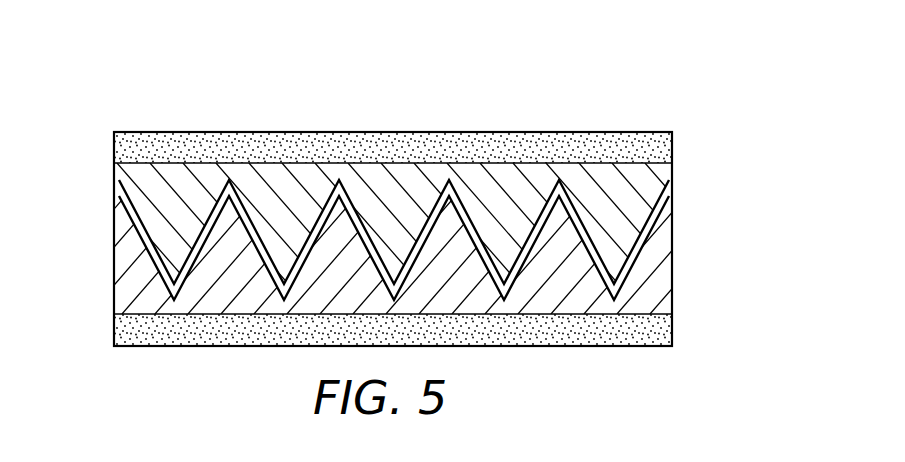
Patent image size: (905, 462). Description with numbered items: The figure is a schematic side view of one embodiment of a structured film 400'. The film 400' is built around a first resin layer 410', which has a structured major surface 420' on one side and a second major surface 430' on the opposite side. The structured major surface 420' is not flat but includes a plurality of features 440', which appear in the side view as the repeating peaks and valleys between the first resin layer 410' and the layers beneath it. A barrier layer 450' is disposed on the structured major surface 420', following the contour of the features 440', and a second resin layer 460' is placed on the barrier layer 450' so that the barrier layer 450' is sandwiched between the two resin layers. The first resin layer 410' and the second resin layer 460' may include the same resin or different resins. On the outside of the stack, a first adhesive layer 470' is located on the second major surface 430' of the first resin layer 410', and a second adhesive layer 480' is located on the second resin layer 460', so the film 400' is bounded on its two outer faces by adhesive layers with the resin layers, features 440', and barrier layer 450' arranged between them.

The film 400' is at (435, 211).
The first resin layer 410' is at (392, 226).
The structured major surface 420' is at (395, 246).
The second major surface 430' is at (393, 120).
The features 440' is at (556, 317).
The barrier layer 450' is at (352, 232).
The second resin layer 460' is at (352, 248).
The first adhesive layer 470' is at (353, 147).
The second adhesive layer 480' is at (353, 330).